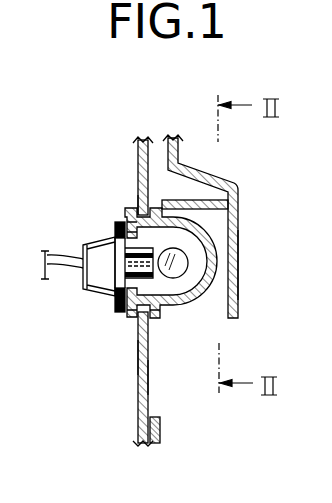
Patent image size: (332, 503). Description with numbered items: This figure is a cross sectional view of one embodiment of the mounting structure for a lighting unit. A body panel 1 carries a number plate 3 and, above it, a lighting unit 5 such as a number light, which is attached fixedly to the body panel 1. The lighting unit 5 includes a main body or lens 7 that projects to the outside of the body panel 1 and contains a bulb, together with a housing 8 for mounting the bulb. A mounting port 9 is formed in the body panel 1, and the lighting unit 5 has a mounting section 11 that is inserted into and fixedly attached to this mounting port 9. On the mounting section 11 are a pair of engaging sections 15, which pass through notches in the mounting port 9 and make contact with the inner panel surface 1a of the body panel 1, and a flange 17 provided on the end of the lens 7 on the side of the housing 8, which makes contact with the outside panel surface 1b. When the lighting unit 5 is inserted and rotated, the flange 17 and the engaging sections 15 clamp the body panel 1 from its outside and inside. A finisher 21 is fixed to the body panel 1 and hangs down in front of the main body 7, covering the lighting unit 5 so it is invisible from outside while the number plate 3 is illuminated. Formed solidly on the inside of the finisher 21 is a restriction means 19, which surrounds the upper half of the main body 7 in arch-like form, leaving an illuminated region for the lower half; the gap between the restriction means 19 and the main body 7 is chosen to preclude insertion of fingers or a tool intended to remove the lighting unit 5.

The body panel 1 is at (136, 388).
The inner panel surface 1a is at (137, 358).
The outside panel surface 1b is at (149, 378).
The number plate 3 is at (161, 425).
The lighting unit 5 is at (170, 313).
The main body or lens 7 is at (206, 236).
The housing 8 is at (88, 243).
The mounting port 9 is at (114, 297).
The mounting section 11 is at (126, 210).
The engaging sections 15 is at (132, 316).
The flange 17 is at (137, 201).
The restriction means 19 is at (204, 200).
The finisher 21 is at (239, 280).